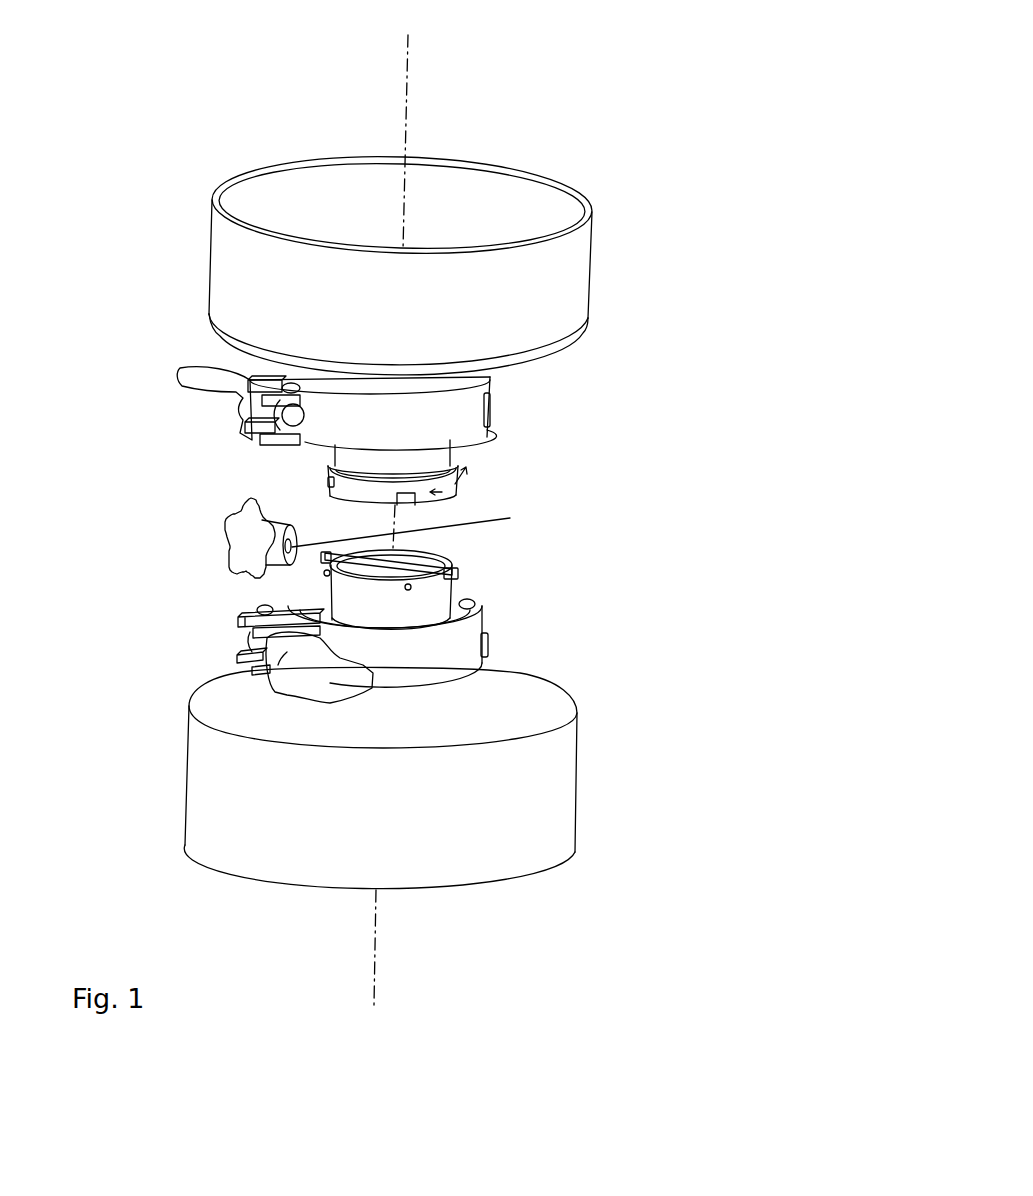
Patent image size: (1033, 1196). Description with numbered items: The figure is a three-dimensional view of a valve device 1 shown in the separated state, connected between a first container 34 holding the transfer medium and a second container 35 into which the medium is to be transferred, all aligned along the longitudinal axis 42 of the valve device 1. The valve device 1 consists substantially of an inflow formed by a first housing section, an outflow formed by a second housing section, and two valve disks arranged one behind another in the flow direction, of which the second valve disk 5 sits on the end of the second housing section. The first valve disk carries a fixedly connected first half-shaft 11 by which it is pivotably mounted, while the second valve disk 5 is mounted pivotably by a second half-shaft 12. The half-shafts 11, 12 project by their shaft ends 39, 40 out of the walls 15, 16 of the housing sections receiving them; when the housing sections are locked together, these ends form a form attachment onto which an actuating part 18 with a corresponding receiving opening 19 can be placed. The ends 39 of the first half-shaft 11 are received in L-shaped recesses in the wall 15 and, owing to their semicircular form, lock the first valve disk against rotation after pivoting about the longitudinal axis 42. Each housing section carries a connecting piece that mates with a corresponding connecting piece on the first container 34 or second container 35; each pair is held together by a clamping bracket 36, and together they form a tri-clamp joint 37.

The longitudinal axis 42 is at (410, 107).
The first container 34 is at (553, 272).
The clamping bracket 36 is at (480, 400).
The tri-clamp joint 37 is at (522, 402).
The first half-shaft 11 is at (460, 484).
The shaft ends of first half-shaft 39 is at (325, 465).
The wall 15 is at (330, 476).
The actuating part 18 is at (232, 541).
The receiving opening 19 is at (510, 518).
The valve device 1 is at (522, 531).
The second valve disk 5 is at (462, 553).
The second half-shaft 12 is at (455, 567).
The shaft end of second half-shaft 40 is at (323, 558).
The wall 16 is at (328, 572).
The second container 35 is at (513, 792).